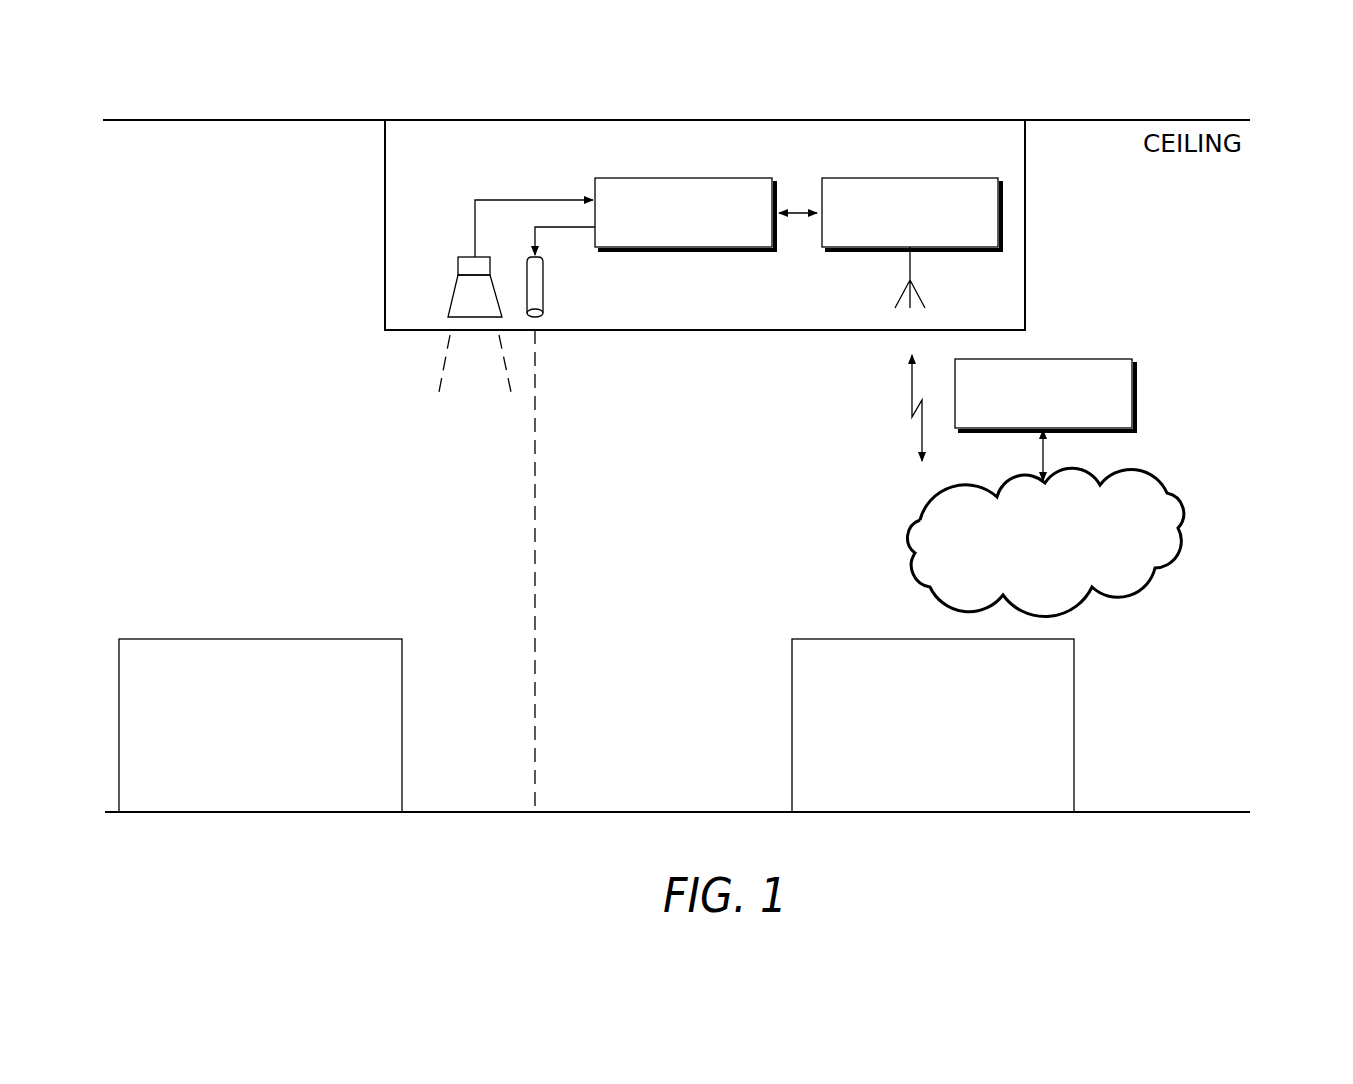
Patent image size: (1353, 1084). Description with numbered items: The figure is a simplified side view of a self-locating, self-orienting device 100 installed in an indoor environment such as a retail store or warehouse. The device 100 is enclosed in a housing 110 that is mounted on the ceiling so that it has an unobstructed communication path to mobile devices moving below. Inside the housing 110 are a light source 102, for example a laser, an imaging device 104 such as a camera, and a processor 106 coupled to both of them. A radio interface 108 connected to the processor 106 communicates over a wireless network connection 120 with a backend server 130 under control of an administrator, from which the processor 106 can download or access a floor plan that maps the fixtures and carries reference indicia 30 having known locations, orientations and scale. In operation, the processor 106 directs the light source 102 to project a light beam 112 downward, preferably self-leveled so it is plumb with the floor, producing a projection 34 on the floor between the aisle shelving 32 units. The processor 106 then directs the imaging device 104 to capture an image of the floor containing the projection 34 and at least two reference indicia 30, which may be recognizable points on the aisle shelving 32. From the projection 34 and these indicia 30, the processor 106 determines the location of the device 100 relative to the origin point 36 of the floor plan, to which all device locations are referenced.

The device 100 is at (470, 157).
The light source 102 is at (545, 283).
The imaging device 104 is at (453, 289).
The processor 106 is at (685, 178).
The radio interface 108 is at (910, 178).
The housing 110 is at (385, 228).
The light beam 112 is at (537, 386).
The wireless network connection 120 is at (917, 520).
The backend server 130 is at (1040, 359).
The reference indicia 30 is at (411, 627).
The aisle shelving 32 is at (243, 639).
The projection 34 is at (544, 801).
The origin point 36 is at (1256, 801).